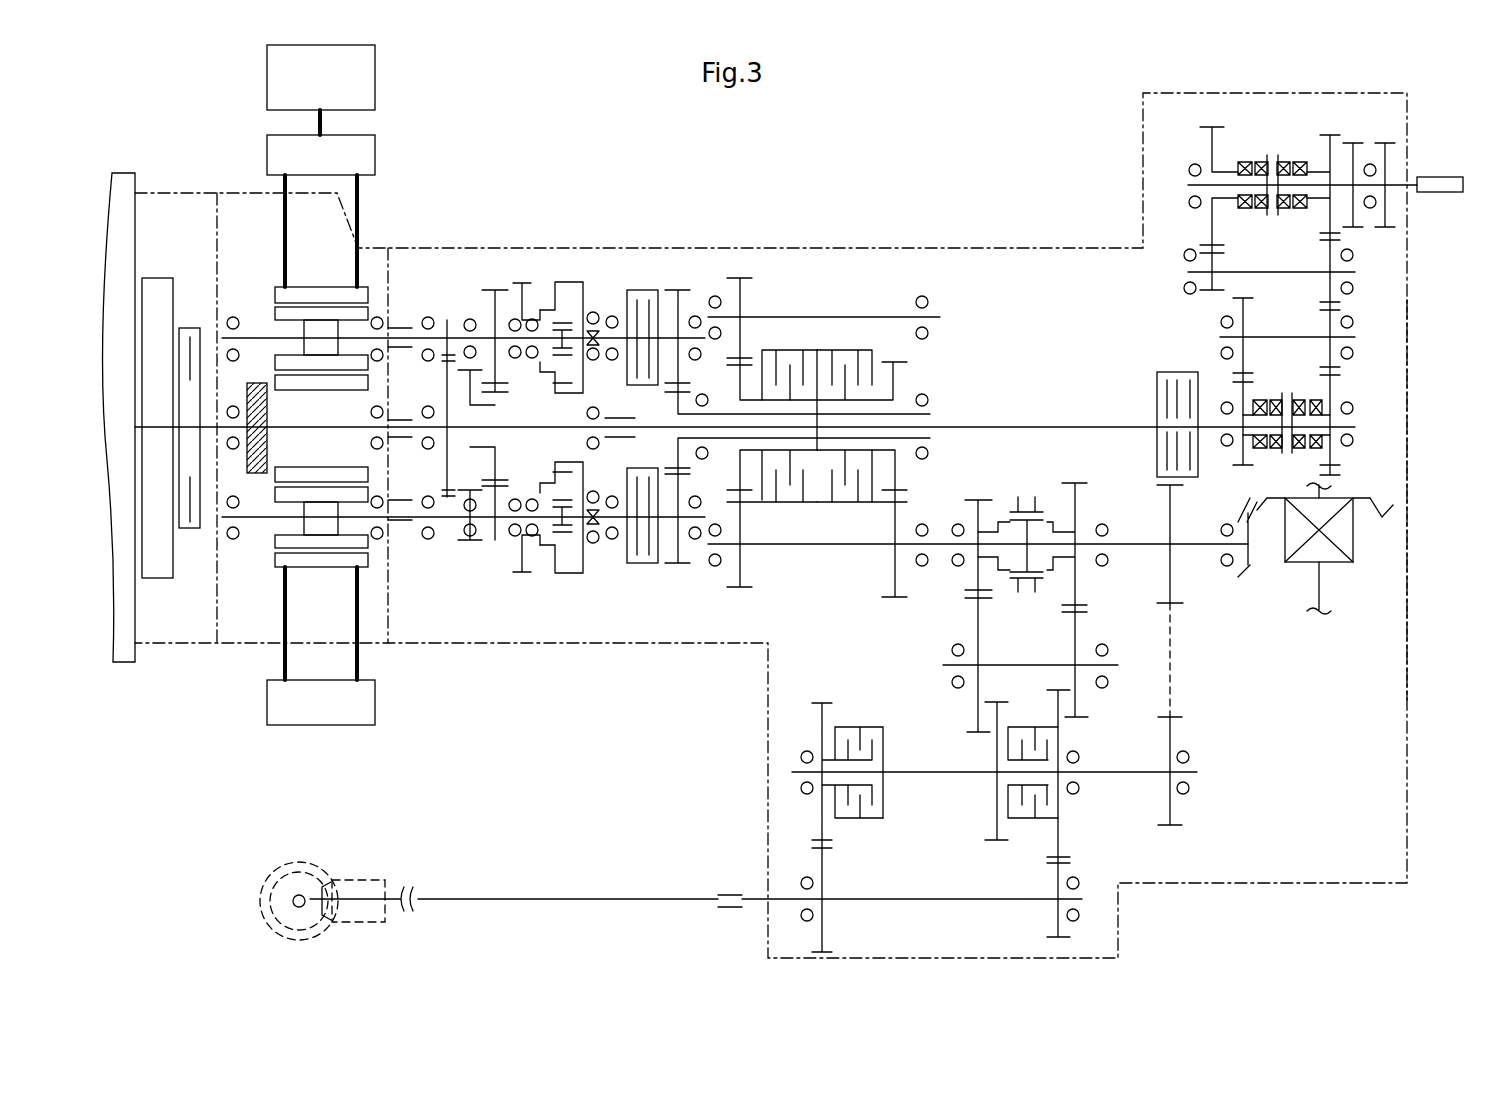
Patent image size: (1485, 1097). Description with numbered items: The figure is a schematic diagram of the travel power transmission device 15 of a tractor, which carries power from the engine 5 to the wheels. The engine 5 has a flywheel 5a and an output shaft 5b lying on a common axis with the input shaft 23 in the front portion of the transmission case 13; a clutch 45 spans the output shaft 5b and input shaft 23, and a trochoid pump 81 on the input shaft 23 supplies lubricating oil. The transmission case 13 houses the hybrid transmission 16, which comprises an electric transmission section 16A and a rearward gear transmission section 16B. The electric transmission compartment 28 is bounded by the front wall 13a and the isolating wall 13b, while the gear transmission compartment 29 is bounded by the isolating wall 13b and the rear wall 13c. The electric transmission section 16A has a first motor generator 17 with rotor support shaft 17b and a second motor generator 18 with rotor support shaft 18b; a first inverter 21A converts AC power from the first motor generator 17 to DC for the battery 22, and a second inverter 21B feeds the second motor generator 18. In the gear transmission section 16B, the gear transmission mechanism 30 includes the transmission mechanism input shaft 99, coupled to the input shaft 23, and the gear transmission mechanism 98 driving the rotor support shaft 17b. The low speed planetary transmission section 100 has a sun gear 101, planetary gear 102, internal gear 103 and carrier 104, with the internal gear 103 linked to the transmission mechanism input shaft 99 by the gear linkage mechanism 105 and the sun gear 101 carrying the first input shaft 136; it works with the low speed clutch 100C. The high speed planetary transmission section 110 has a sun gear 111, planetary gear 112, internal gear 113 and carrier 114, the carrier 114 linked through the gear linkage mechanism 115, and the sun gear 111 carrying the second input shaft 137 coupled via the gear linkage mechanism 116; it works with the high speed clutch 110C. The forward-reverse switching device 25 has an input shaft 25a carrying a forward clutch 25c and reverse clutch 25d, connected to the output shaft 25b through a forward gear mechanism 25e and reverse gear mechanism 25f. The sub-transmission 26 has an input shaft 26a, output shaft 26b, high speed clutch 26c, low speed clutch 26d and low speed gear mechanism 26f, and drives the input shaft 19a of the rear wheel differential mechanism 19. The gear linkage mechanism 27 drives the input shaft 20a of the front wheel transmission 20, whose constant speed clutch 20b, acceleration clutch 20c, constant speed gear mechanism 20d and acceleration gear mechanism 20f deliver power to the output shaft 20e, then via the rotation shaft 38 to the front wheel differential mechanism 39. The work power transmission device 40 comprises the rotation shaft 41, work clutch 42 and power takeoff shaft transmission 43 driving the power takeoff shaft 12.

The engine 5 is at (135, 225).
The flywheel 5a is at (173, 298).
The output shaft 5b is at (178, 432).
The clutch 45 is at (200, 338).
The trochoid pump 81 is at (250, 383).
The electric transmission compartment 28 is at (234, 241).
The gear transmission compartment 29 is at (1072, 294).
The battery 22 is at (321, 90).
The first inverter 21A is at (321, 211).
The second inverter 21B is at (321, 646).
The first motor generator 17 is at (298, 385).
The rotor support shaft 17b is at (318, 338).
The second motor generator 18 is at (347, 560).
The rotor support shaft 18b is at (317, 518).
The input shaft 23 is at (298, 430).
The gear transmission mechanism 98 is at (428, 325).
The transmission mechanism input shaft 99 is at (433, 410).
The second input shaft 137 is at (488, 330).
The first input shaft 136 is at (458, 520).
The gear linkage mechanism 116 is at (512, 520).
The carrier 114 is at (543, 300).
The gear linkage mechanism 115 is at (518, 293).
The high speed planetary transmission section 110 is at (565, 261).
The internal gear 113 is at (548, 300).
The sun gear 111 is at (593, 316).
The planetary gear 112 is at (570, 370).
The carrier 104 is at (572, 485).
The sun gear 101 is at (600, 513).
The high speed clutch 110C is at (643, 290).
The low speed clutch 100C is at (650, 565).
The planetary gear 102 is at (585, 548).
The internal gear 103 is at (570, 565).
The gear linkage mechanism 105 is at (510, 563).
The low speed planetary transmission section 100 is at (527, 592).
The hybrid transmission 16 is at (584, 621).
The electric transmission section 16A is at (263, 634).
The gear transmission section 16B is at (733, 615).
The transmission case 13 is at (960, 248).
The front wall 13a is at (217, 607).
The isolating wall 13b is at (388, 613).
The rear wall 13c is at (1407, 460).
The travel power transmission device 15 is at (830, 178).
The gear transmission mechanism 30 is at (694, 262).
The forward-reverse switching device 25 is at (831, 281).
The input shaft 25a is at (903, 414).
The output shaft 25b is at (772, 548).
The forward clutch 25c is at (860, 350).
The reverse clutch 25d is at (800, 350).
The forward gear mechanism 25e is at (893, 565).
The reverse gear mechanism 25f is at (740, 293).
The sub-transmission 26 is at (1034, 465).
The input shaft 26a is at (947, 548).
The output shaft 26b is at (1143, 543).
The high speed clutch 26c is at (1003, 517).
The low speed clutch 26d is at (1050, 517).
The low speed gear mechanism 26f is at (1104, 614).
The work power transmission device 40 is at (1143, 356).
The rotation shaft 41 is at (1118, 427).
The work clutch 42 is at (1175, 372).
The power takeoff shaft transmission 43 is at (1172, 204).
The power takeoff shaft 12 is at (1445, 195).
The rear wheel differential mechanism 19 is at (1290, 592).
The input shaft 19a is at (1193, 547).
The front wheel transmission 20 is at (879, 696).
The input shaft 20a is at (930, 772).
The constant speed clutch 20b is at (848, 818).
The acceleration clutch 20c is at (1030, 818).
The constant speed gear mechanism 20d is at (818, 728).
The output shaft 20e is at (960, 900).
The acceleration gear mechanism 20f is at (1060, 840).
The gear linkage mechanism 27 is at (1198, 740).
The rotation shaft 38 is at (590, 899).
The front wheel differential mechanism 39 is at (299, 862).